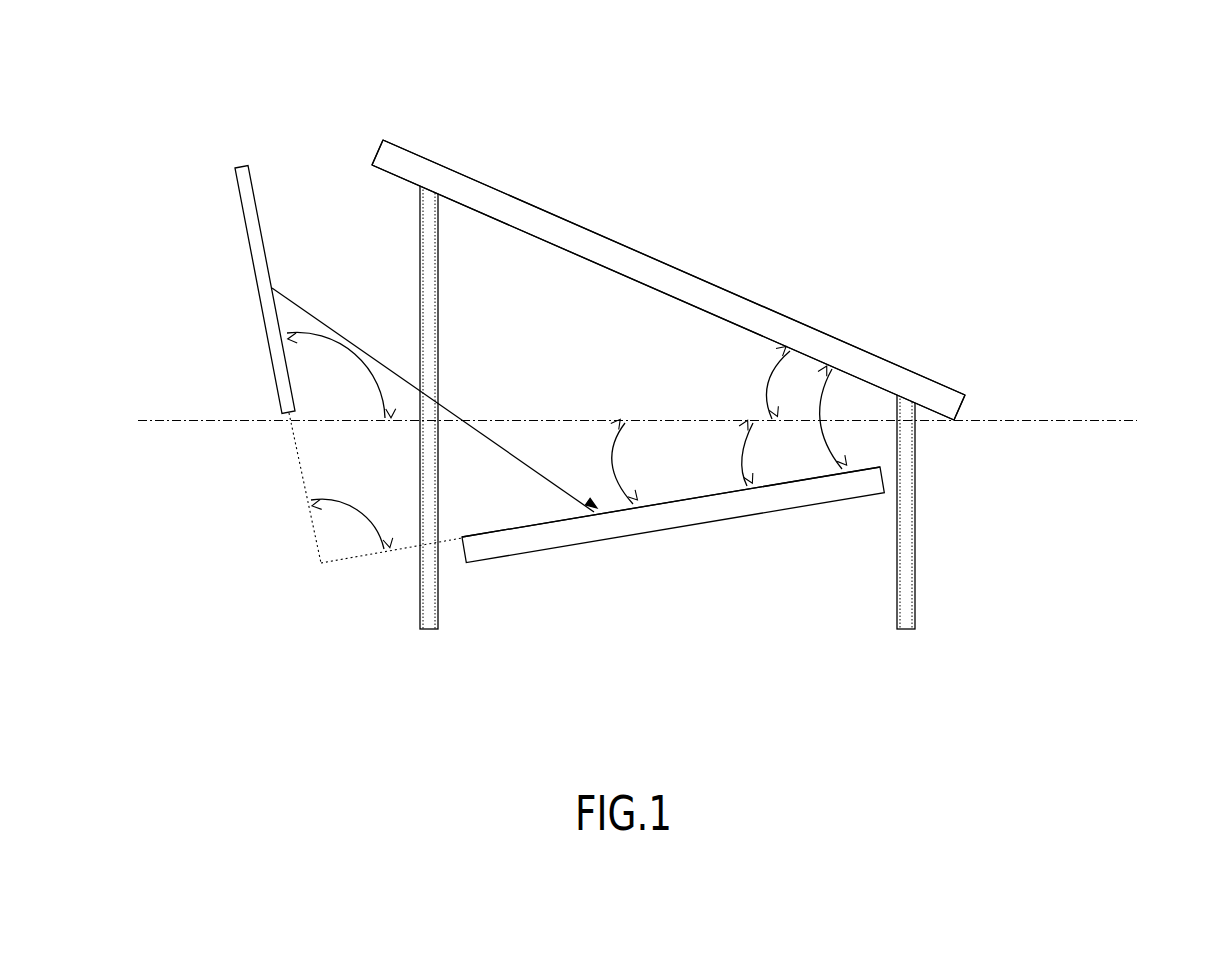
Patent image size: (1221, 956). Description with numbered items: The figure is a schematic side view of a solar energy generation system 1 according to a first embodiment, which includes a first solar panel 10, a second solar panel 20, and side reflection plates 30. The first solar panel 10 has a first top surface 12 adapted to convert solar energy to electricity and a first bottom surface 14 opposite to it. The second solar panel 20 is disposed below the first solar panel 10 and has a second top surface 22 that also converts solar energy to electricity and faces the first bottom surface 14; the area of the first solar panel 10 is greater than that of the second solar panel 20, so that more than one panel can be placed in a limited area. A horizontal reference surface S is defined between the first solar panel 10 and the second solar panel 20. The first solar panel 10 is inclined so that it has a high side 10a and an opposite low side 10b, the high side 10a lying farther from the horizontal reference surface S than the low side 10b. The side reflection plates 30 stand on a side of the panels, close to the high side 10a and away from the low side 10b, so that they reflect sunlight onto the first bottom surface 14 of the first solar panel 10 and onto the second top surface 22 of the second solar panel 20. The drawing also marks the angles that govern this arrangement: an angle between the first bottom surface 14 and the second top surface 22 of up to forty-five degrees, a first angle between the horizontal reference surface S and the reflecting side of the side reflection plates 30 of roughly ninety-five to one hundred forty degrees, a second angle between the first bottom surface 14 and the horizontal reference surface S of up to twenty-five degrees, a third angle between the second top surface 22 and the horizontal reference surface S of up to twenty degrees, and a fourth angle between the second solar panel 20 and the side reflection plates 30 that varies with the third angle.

The solar energy generation system 1 is at (885, 214).
The first solar panel 10 is at (880, 352).
The high side 10a is at (383, 139).
The low side 10b is at (964, 393).
The first top surface 12 is at (598, 233).
The first bottom surface 14 is at (655, 291).
The second solar panel 20 is at (677, 531).
The second top surface 22 is at (732, 491).
The side reflection plates 30 is at (239, 217).
The horizontal reference surface S is at (1117, 419).